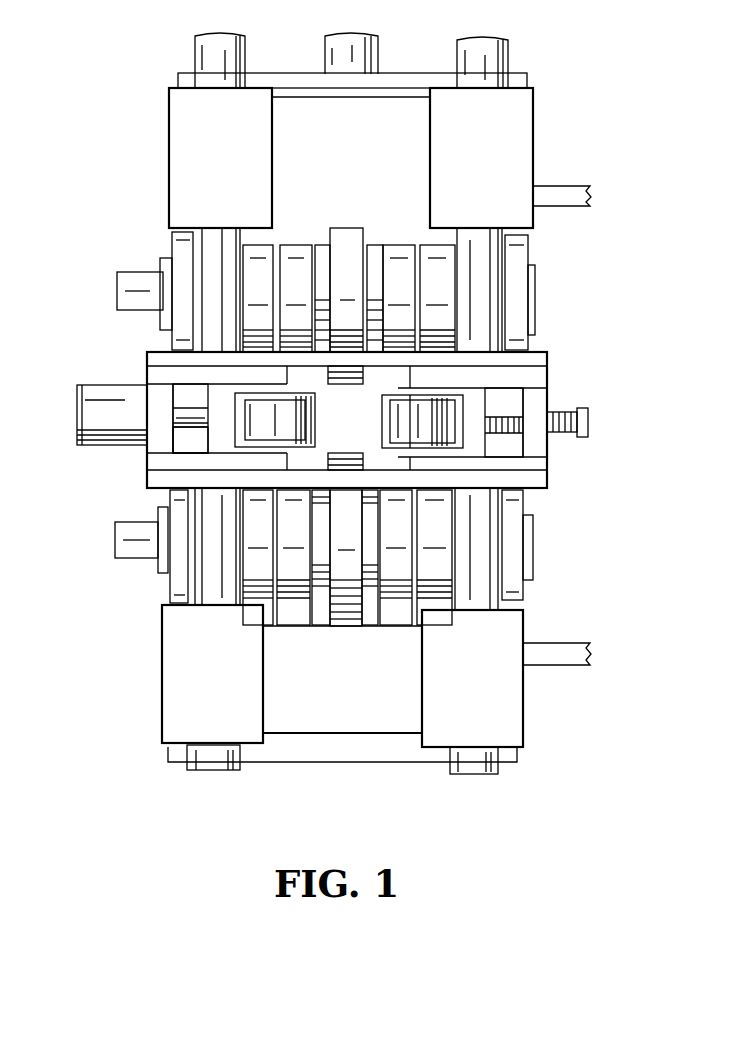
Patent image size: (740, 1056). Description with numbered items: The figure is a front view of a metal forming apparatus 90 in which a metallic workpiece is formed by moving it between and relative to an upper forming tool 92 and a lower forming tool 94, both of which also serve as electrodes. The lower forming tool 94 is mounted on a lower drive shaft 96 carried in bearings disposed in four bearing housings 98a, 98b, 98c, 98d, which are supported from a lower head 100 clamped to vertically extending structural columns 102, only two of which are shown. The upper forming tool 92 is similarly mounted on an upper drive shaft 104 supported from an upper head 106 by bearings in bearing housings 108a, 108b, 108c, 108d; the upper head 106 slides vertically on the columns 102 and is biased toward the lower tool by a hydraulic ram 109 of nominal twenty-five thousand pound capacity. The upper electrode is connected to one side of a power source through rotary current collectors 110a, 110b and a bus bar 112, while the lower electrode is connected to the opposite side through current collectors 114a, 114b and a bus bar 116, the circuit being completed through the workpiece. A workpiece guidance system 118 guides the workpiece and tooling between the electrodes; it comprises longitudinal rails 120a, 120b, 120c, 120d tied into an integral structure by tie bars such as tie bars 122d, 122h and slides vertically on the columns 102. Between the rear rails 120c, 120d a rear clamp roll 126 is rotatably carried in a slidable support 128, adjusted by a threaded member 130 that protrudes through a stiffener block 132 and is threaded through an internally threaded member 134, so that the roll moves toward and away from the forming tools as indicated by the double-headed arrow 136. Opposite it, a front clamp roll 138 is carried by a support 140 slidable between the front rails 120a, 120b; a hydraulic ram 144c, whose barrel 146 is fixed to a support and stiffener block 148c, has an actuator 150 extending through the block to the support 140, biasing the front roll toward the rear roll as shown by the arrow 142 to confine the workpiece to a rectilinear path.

The apparatus 90 is at (158, 82).
The upper forming tool 92 is at (347, 225).
The lower forming tool 94 is at (356, 531).
The lower drive shaft 96 is at (112, 522).
The bearing housing 98a is at (166, 497).
The bearing housing 98b is at (308, 531).
The bearing housing 98c is at (410, 531).
The bearing housing 98d is at (522, 505).
The lower head 100 is at (152, 655).
The structural column 102 is at (198, 38).
The upper drive shaft 104 is at (120, 278).
The upper head 106 is at (320, 70).
The bearing housing 108a is at (178, 253).
The bearing housing 108b is at (298, 240).
The bearing housing 108c is at (398, 240).
The bearing housing 108d is at (522, 252).
The hydraulic ram 109 is at (375, 40).
The rotary current collector 110a is at (272, 299).
The rotary current collector 110b is at (452, 299).
The bus bar 112 is at (572, 190).
The current collector 114a is at (272, 531).
The current collector 114b is at (450, 531).
The bus bar 116 is at (578, 650).
The workpiece guidance system 118 is at (140, 335).
The upper front longitudinal rail 120a is at (148, 374).
The lower front longitudinal rail 120b is at (148, 463).
The upper rear longitudinal rail 120c is at (548, 378).
The lower rear longitudinal rail 120d is at (548, 470).
The tie bar 122d is at (148, 354).
The tie bar 122h is at (148, 480).
The rear clamp roll 126 is at (430, 408).
The support 128 is at (486, 416).
The threaded member 130 is at (582, 425).
The stiffener block 132 is at (545, 400).
The internally threaded member 134 is at (560, 412).
The double-headed arrow 136 is at (416, 424).
The front clamp roll 138 is at (271, 402).
The support 140 is at (216, 388).
The arrow 142 is at (292, 420).
The hydraulic ram 144c is at (78, 410).
The barrel 146 is at (78, 390).
The support and stiffener block 148c is at (152, 398).
The actuator 150 is at (204, 430).